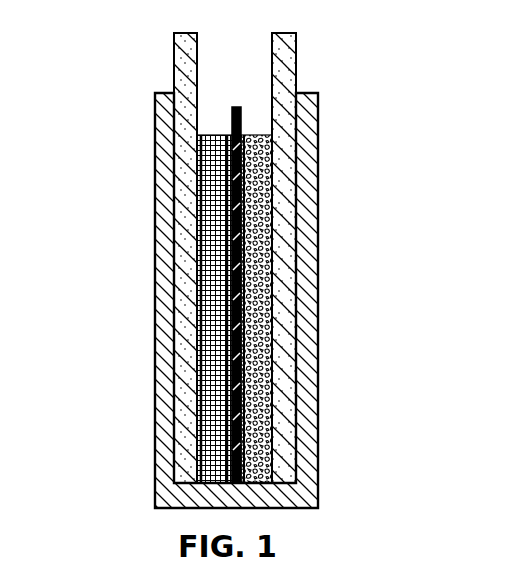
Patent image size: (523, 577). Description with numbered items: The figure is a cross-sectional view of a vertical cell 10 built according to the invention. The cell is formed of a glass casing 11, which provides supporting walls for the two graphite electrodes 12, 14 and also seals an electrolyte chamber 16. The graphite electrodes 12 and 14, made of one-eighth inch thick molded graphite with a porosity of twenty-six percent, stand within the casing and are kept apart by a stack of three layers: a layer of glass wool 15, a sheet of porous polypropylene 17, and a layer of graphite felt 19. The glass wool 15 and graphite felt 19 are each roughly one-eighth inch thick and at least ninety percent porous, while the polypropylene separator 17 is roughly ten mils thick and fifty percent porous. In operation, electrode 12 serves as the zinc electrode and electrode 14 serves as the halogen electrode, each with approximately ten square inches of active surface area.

The vertical cell 10 is at (228, 270).
The glass casing 11 is at (163, 232).
The graphite electrode 12 is at (293, 65).
The graphite electrode 14 is at (183, 62).
The layer of glass wool 15 is at (251, 135).
The electrolyte chamber 16 is at (250, 74).
The porous polypropylene sheet 17 is at (236, 107).
The layer of graphite felt 19 is at (226, 134).